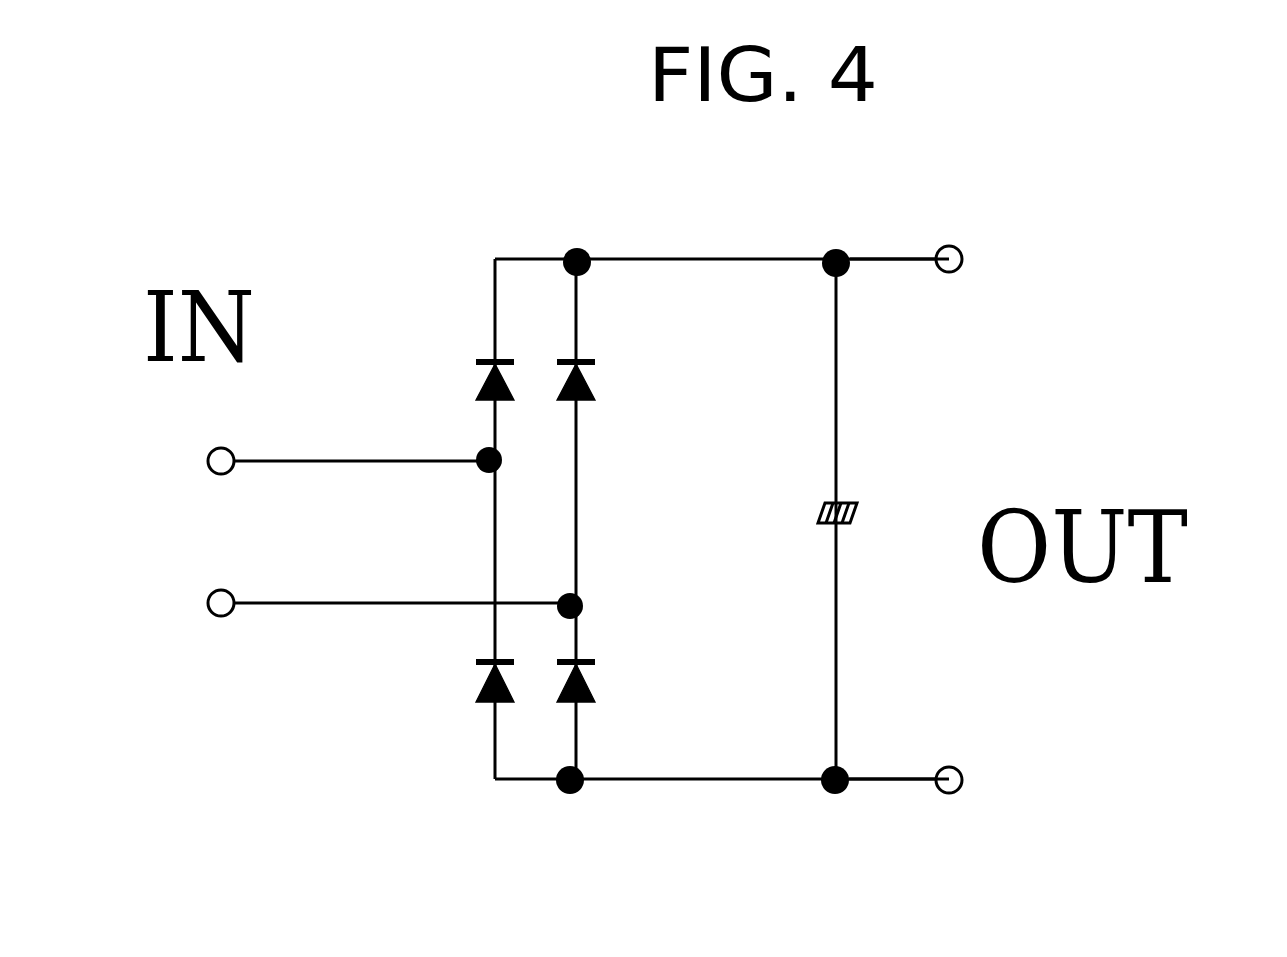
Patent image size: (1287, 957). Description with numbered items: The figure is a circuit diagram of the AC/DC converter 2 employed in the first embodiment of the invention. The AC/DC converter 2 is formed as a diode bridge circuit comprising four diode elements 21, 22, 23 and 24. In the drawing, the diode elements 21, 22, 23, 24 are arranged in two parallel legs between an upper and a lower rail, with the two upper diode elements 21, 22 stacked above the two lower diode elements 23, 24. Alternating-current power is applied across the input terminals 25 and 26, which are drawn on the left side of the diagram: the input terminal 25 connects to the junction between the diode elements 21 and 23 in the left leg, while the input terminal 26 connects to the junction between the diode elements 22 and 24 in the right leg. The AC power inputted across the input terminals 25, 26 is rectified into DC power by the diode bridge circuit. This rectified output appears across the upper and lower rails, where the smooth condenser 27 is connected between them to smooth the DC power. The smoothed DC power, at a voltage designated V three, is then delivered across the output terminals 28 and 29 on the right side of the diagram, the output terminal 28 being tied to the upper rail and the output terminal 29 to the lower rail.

The AC/DC converter 2 is at (1105, 370).
The diode element 21 is at (453, 385).
The diode element 22 is at (622, 385).
The diode element 23 is at (453, 688).
The diode element 24 is at (622, 694).
The input terminal 25 is at (302, 468).
The input terminal 26 is at (343, 611).
The smooth condenser 27 is at (883, 476).
The output terminal 28 is at (956, 275).
The output terminal 29 is at (956, 797).